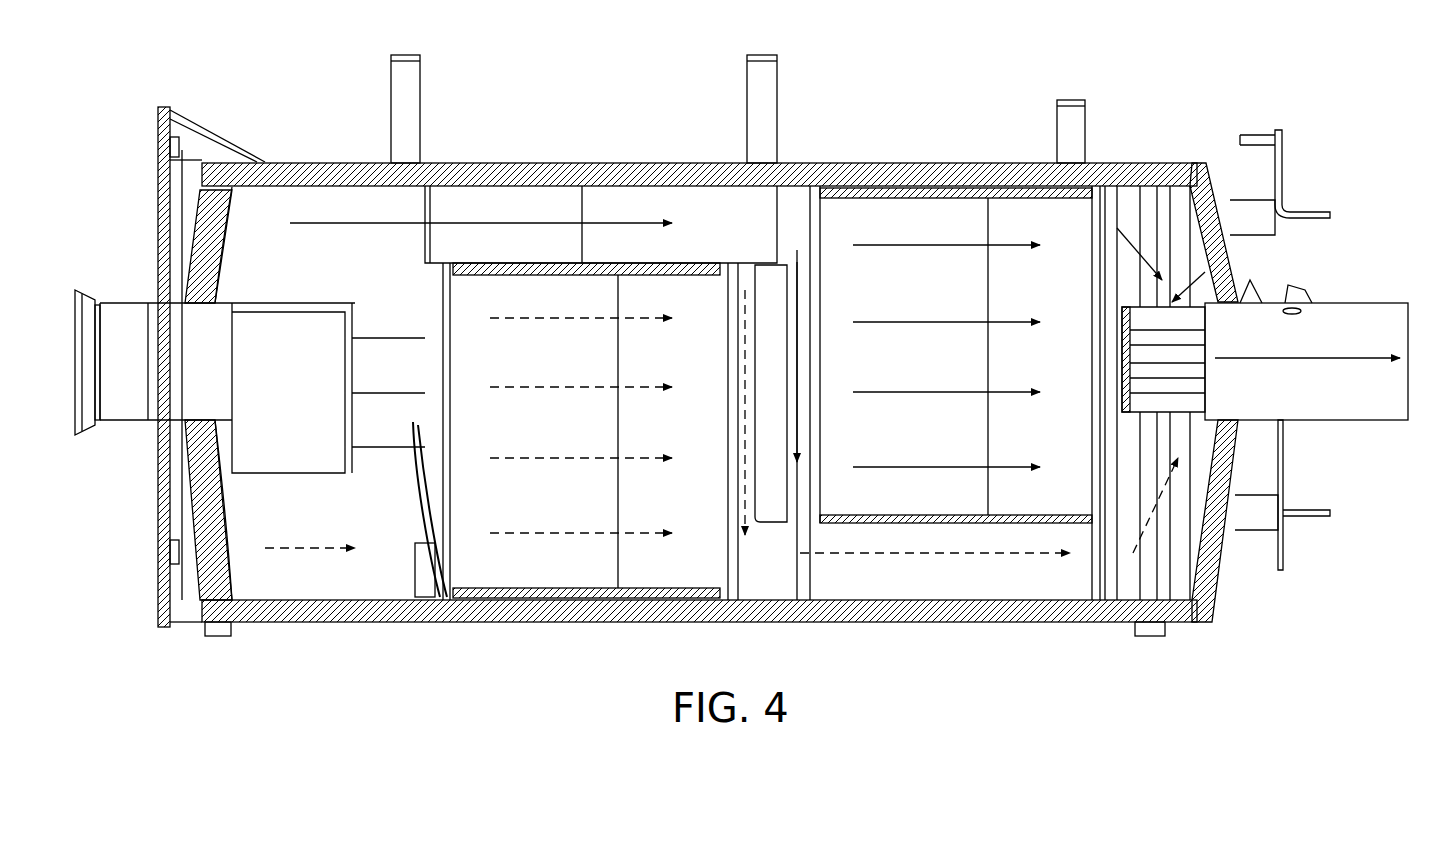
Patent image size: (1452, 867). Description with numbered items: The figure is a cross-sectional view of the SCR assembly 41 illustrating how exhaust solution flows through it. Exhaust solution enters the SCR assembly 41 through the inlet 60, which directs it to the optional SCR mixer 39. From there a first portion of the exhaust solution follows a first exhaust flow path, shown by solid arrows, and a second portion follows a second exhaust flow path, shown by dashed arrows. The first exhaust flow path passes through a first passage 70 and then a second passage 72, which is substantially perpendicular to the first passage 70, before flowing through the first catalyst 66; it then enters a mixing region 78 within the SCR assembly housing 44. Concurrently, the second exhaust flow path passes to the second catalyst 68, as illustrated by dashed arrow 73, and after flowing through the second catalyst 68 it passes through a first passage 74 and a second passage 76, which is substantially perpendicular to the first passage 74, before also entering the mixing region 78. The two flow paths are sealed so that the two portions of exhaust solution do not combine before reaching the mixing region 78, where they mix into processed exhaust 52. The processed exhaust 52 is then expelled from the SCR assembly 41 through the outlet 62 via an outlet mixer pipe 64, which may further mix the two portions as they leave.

The SCR assembly 41 is at (1200, 78).
The SCR mixer 39 is at (258, 303).
The SCR assembly housing 44 is at (1208, 192).
The processed exhaust 52 is at (1325, 352).
The inlet 60 is at (128, 420).
The outlet 62 is at (1362, 305).
The outlet mixer pipe 64 is at (1178, 295).
The first catalyst 66 is at (905, 215).
The second catalyst 68 is at (540, 573).
The first passage 70 is at (475, 200).
The second passage 72 is at (795, 515).
The dashed arrow 73 is at (308, 548).
The first passage 74 is at (745, 270).
The second passage 76 is at (952, 573).
The mixing region 78 is at (1160, 200).